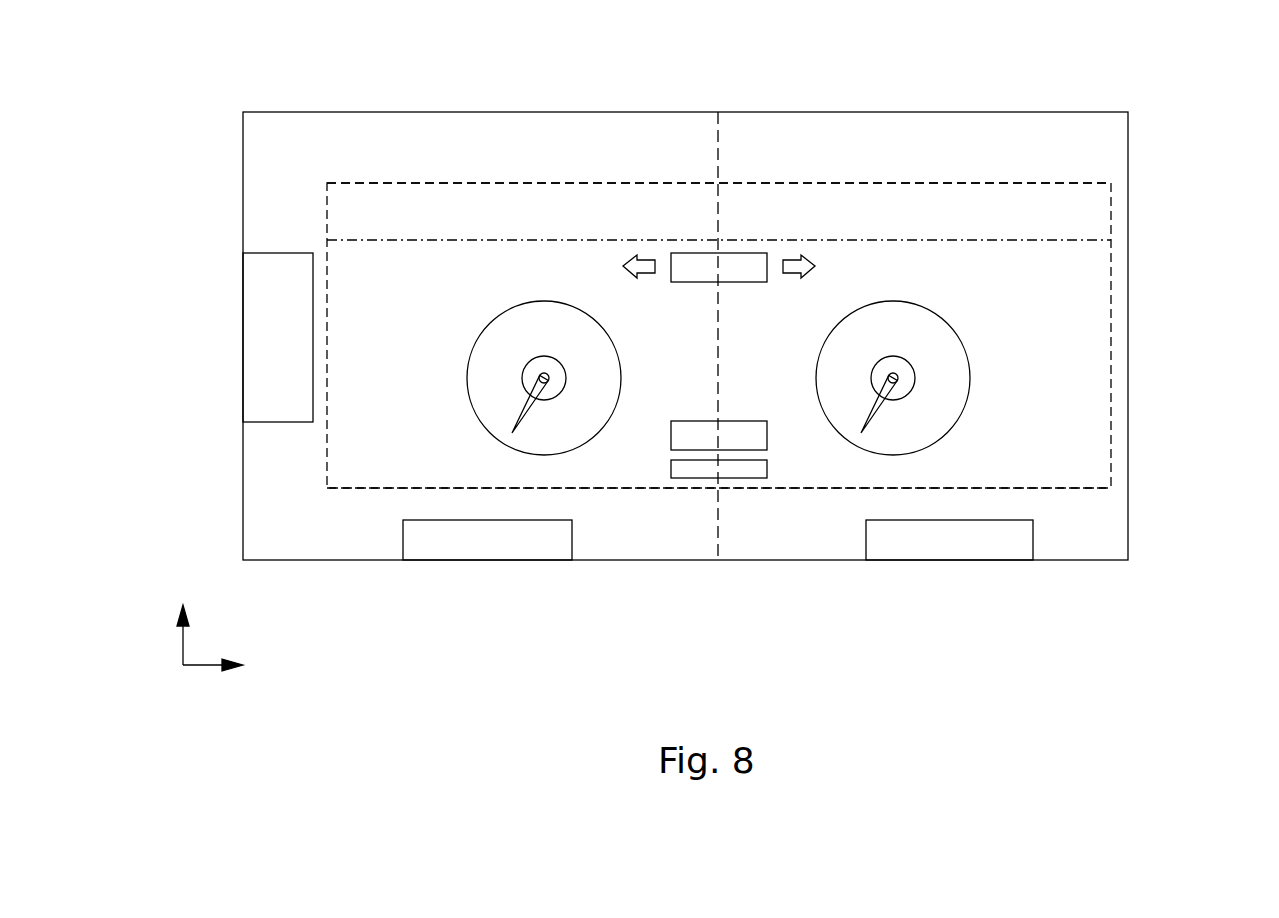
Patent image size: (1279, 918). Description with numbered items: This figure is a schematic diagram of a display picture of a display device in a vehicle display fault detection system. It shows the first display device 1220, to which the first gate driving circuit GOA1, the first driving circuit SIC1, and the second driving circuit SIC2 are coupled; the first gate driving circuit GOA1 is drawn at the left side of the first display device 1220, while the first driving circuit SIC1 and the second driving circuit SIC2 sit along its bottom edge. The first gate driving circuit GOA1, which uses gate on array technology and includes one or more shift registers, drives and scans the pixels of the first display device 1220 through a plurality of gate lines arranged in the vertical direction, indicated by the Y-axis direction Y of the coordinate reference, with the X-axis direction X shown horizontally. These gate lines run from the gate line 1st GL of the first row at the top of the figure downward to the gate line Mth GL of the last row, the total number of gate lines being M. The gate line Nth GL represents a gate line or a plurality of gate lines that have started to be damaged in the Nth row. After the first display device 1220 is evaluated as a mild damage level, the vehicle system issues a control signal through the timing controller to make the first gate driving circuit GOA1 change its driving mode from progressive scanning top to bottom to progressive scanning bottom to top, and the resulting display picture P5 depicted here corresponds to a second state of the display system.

The first display device 1220 is at (342, 112).
The display picture P5 is at (851, 183).
The gate line of a first row 1st GL is at (1088, 183).
The gate line of a Nth row Nth GL is at (1088, 240).
The gate line of a Mth row Mth GL is at (1088, 488).
The first gate driving circuit GOA1 is at (278, 337).
The first driving circuit SIC1 is at (487, 540).
The second driving circuit SIC2 is at (949, 540).
The X-axis direction X is at (224, 665).
The Y-axis direction Y is at (181, 622).